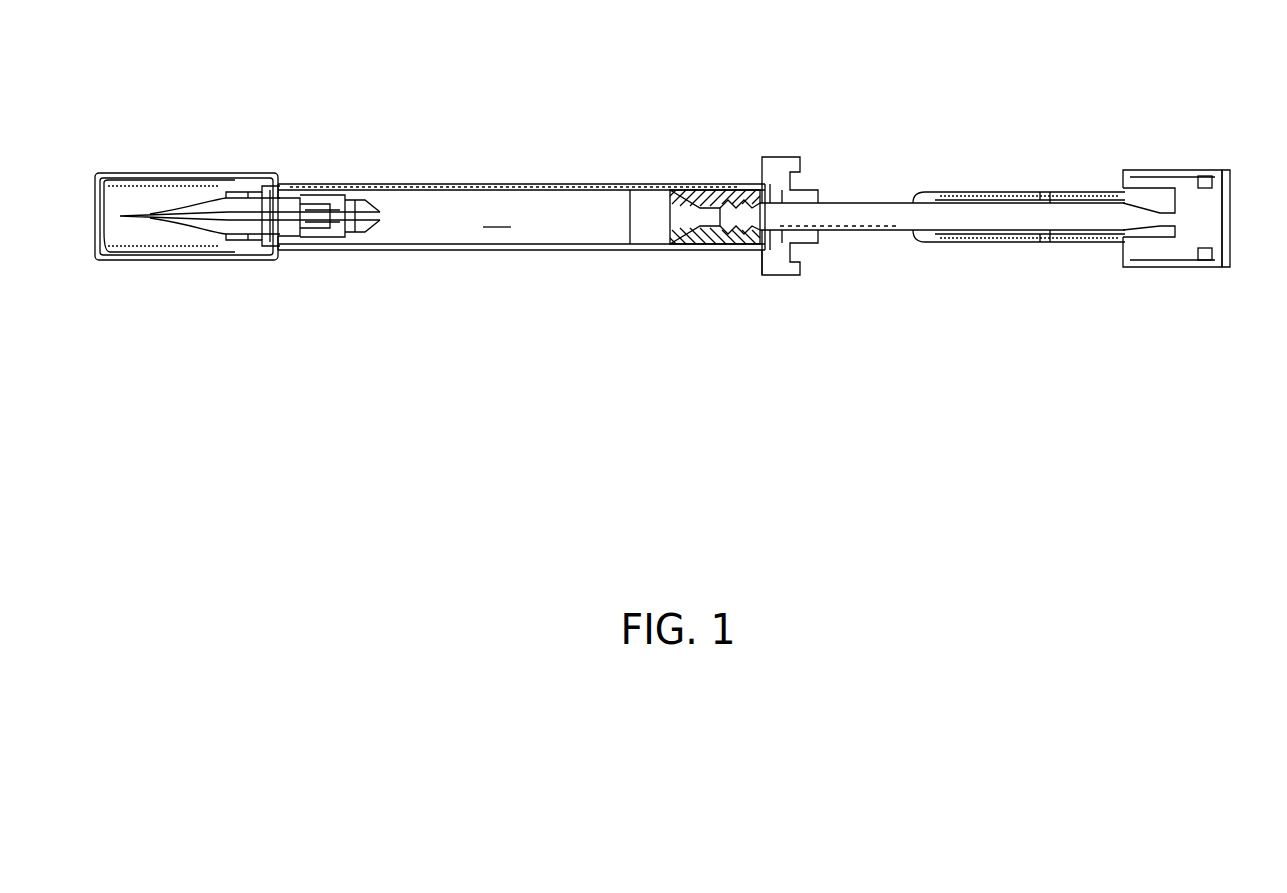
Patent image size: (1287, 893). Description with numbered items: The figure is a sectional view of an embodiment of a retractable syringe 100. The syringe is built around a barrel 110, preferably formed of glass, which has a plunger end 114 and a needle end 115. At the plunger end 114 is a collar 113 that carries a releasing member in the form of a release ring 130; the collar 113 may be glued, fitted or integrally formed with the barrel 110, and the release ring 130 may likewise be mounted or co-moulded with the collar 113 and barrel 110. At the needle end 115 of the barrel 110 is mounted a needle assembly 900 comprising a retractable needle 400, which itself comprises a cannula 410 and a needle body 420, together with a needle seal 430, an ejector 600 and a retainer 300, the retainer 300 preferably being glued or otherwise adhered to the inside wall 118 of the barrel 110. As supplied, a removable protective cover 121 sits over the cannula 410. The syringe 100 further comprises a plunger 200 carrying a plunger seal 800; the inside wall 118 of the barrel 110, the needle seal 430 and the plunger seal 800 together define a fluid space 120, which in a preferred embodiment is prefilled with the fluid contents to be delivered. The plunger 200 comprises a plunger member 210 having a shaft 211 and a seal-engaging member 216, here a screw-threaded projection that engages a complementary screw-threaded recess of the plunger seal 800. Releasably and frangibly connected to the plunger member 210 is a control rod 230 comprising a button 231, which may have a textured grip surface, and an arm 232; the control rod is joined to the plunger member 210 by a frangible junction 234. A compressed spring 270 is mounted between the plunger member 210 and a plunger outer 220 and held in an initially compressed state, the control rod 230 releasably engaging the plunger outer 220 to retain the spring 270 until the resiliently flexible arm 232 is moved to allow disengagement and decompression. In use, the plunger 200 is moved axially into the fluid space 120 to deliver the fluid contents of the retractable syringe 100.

The retractable syringe 100 is at (580, 340).
The barrel 110 is at (415, 272).
The collar 113 is at (772, 278).
The plunger end 114 is at (855, 268).
The needle end 115 is at (298, 166).
The inside wall 118 is at (428, 195).
The fluid space 120 is at (553, 217).
The removable protective cover 121 is at (88, 244).
The release ring 130 is at (820, 178).
The plunger 200 is at (840, 182).
The plunger member 210 is at (880, 205).
The shaft 211 is at (885, 240).
The seal-engaging member 216 is at (740, 190).
The plunger outer 220 is at (1115, 185).
The control rod 230 is at (1085, 236).
The button 231 is at (1243, 193).
The arm 232 is at (1132, 193).
The frangible junction 234 is at (1057, 192).
The compressed spring 270 is at (1022, 244).
The retainer 300 is at (298, 256).
The retractable needle 400 is at (200, 166).
The cannula 410 is at (147, 207).
The needle body 420 is at (332, 193).
The needle seal 430 is at (372, 256).
The ejector 600 is at (323, 240).
The plunger seal 800 is at (695, 190).
The needle assembly 900 is at (170, 285).